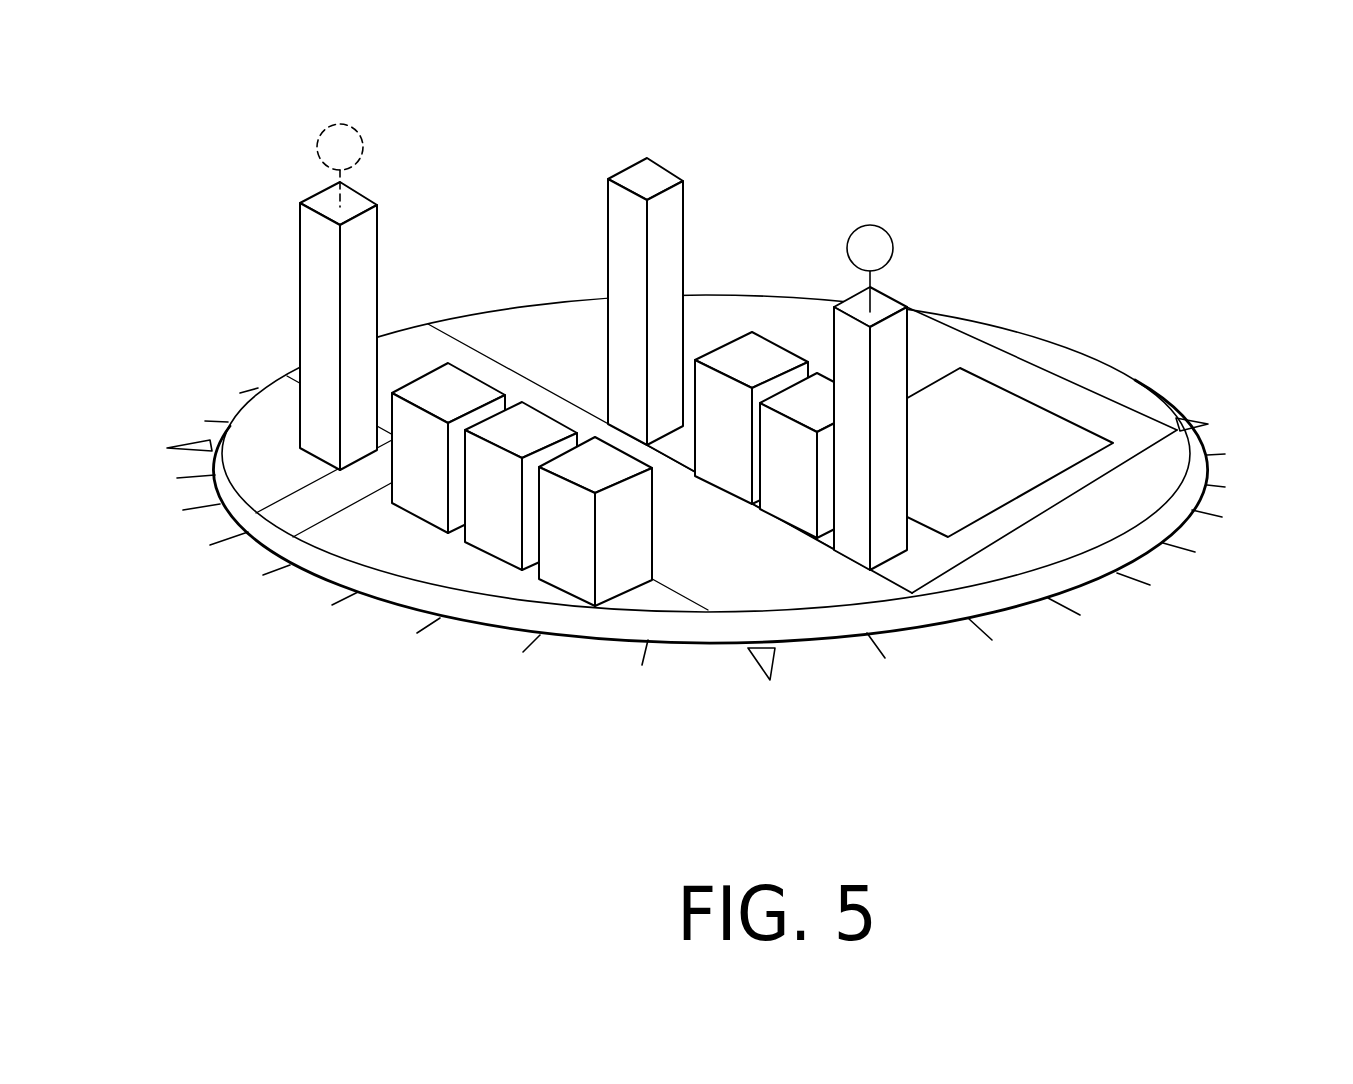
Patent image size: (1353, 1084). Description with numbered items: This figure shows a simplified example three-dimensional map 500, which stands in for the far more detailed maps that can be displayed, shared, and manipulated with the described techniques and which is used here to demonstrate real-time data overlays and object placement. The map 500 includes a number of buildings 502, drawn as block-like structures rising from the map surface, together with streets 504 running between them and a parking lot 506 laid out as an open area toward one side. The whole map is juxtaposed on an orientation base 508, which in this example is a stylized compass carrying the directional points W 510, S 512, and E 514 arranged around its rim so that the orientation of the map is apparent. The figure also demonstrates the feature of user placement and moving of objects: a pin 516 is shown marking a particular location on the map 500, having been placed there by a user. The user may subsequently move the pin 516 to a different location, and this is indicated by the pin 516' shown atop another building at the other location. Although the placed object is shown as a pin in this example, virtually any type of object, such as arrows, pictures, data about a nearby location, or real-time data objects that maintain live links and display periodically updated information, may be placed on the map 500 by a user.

The 3-D map 500 is at (703, 406).
The buildings 502 is at (676, 160).
The streets 504 is at (409, 318).
The parking lot 506 is at (993, 462).
The orientation base 508 is at (1093, 590).
The directional point W 510 is at (155, 495).
The directional point S 512 is at (795, 751).
The directional point E 514 is at (1286, 465).
The pin 516 is at (913, 381).
The pin 516' is at (385, 278).